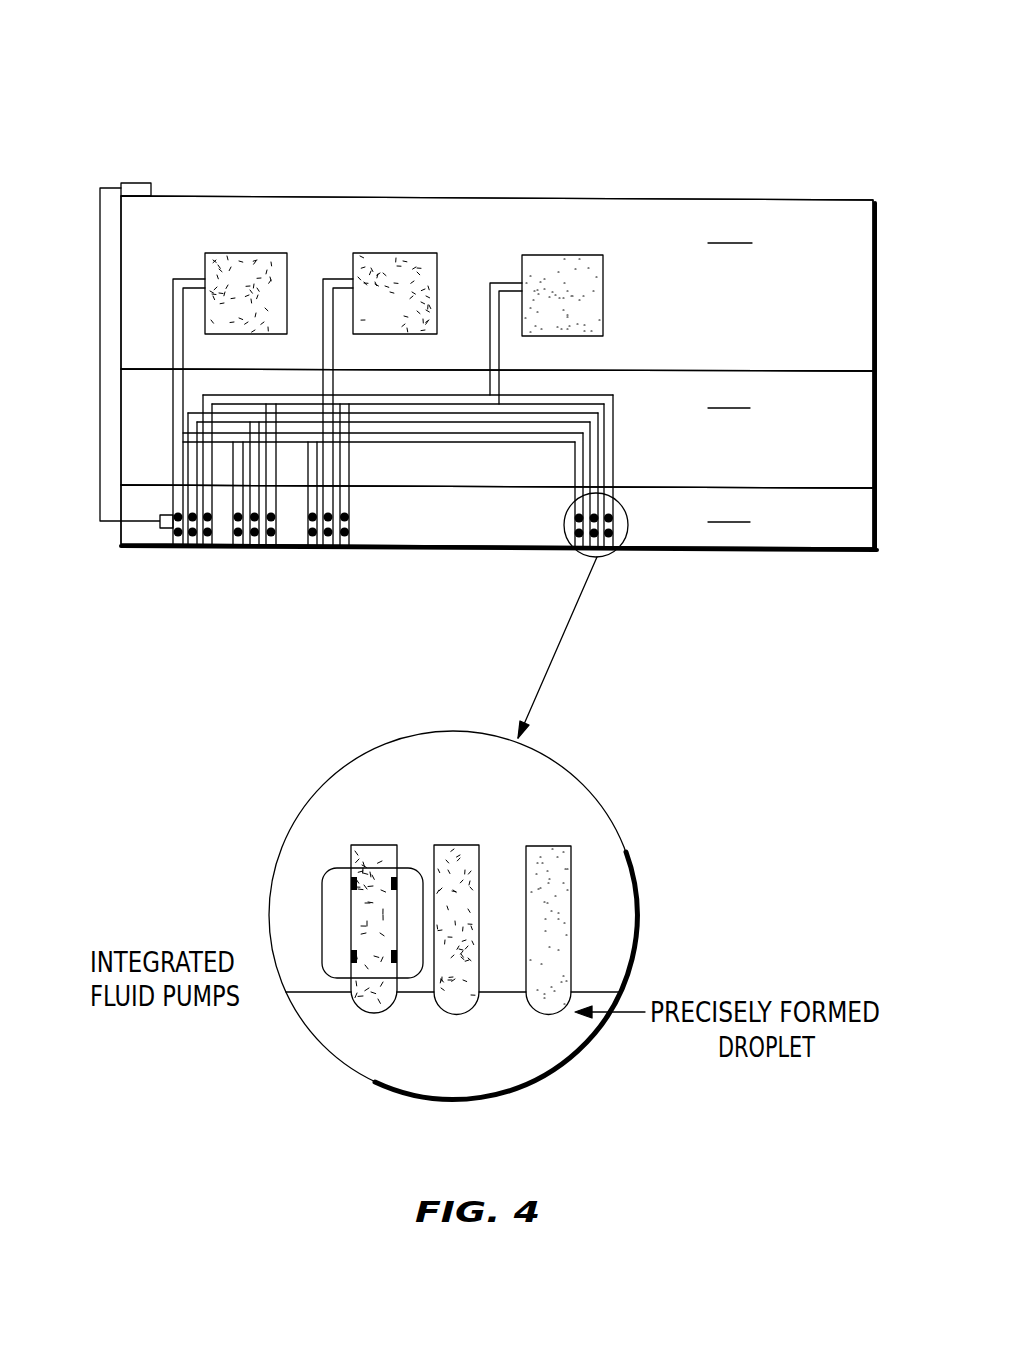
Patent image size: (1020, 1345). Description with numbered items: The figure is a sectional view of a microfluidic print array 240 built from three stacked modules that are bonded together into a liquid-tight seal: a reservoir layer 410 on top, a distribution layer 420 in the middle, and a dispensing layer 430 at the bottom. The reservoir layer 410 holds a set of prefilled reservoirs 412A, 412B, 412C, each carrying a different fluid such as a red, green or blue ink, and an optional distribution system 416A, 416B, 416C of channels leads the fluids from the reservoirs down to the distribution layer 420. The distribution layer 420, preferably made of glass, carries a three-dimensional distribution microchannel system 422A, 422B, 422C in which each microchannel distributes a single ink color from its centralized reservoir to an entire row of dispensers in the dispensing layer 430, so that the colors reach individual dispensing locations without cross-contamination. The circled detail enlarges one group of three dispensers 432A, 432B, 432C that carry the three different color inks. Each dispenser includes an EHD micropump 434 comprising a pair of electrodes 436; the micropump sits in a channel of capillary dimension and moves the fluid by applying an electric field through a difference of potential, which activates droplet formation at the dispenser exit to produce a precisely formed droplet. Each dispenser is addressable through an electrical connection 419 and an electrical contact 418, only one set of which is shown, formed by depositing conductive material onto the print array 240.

The print array 240 is at (583, 118).
The reservoir layer 410 is at (497, 283).
The distribution layer 420 is at (497, 428).
The dispensing layer 430 is at (497, 521).
The reservoir 412A is at (258, 253).
The reservoir 412B is at (397, 253).
The reservoir 412C is at (585, 255).
The distribution system 416A is at (173, 297).
The distribution system 416B is at (323, 297).
The distribution system 416C is at (490, 298).
The electrical contact 418 is at (136, 183).
The electrical connection 419 is at (100, 512).
The distribution microchannel system 422A is at (173, 381).
The distribution microchannel system 422B is at (372, 423).
The distribution microchannel system 422C is at (450, 404).
The dispenser 432A is at (358, 845).
The dispenser 432B is at (465, 846).
The dispenser 432C is at (550, 846).
The EHD micropump 434 is at (323, 963).
The electrodes 436 is at (352, 957).